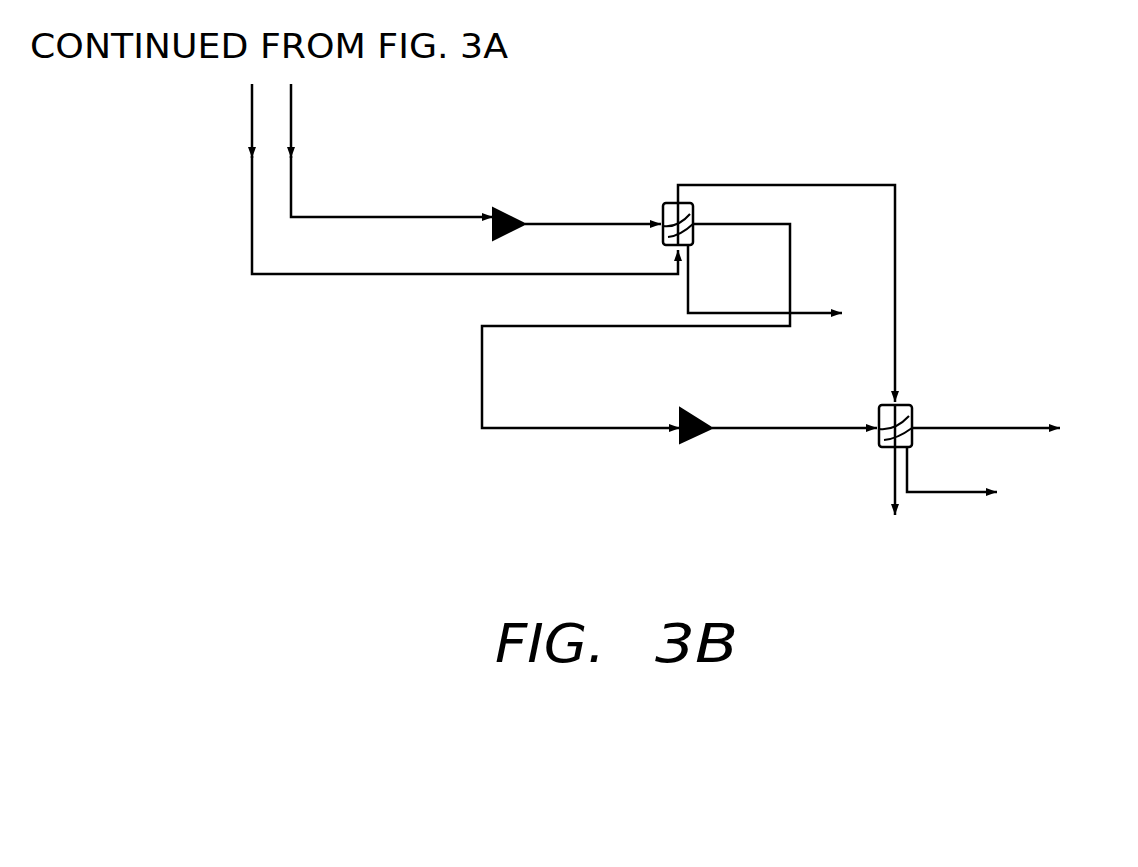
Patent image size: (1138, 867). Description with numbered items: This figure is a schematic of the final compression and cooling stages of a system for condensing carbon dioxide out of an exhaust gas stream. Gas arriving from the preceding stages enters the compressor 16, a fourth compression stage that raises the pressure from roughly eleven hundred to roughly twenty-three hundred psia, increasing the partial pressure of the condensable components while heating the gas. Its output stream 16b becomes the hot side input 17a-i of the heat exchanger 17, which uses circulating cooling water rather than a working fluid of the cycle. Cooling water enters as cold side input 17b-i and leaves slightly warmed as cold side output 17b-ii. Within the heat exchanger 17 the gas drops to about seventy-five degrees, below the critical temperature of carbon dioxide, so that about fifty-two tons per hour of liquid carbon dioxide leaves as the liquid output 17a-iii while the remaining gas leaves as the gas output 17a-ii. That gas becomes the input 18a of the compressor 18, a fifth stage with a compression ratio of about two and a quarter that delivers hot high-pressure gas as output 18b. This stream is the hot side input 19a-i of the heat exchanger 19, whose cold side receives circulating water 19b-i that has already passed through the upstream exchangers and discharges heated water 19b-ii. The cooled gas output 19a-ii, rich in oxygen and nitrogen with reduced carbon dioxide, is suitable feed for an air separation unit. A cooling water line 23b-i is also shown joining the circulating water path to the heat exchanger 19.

The compressor 16 is at (492, 206).
The compressor output stream 16b is at (386, 212).
The heat exchanger 17 is at (664, 196).
The hot side input stream 17a-i is at (630, 216).
The hot side output gas stream 17a-ii is at (793, 295).
The hot side output liquid stream 17a-iii is at (737, 303).
The cold side input stream 17b-i is at (605, 281).
The cold side output stream 17b-ii is at (808, 180).
The compressor 18 is at (695, 446).
The compressor input stream 18a is at (471, 386).
The compressor output stream 18b is at (770, 436).
The heat exchanger 19 is at (917, 403).
The hot side input stream 19a-i is at (825, 422).
The hot side output gas stream 19a-ii is at (965, 433).
The cold side input stream 19b-i is at (1010, 499).
The cold side output stream 19b-ii is at (888, 468).
The cooling stream 23b-i is at (903, 293).